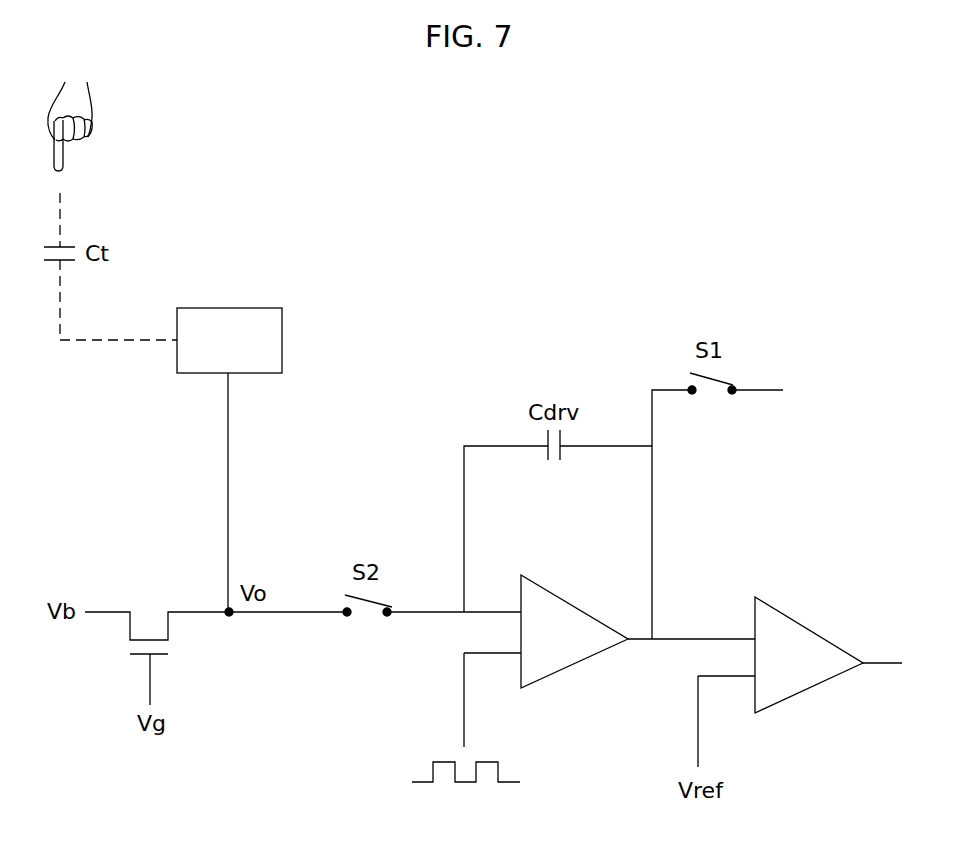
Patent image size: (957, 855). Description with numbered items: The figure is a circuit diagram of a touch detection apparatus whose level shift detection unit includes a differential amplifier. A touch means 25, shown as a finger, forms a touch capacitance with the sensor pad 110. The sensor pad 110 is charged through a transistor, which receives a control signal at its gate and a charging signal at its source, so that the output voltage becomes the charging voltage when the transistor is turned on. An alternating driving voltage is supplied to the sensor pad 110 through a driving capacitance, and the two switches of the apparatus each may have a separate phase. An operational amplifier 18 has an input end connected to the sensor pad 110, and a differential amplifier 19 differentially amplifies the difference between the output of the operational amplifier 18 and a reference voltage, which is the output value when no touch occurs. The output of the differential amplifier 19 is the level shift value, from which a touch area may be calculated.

The finger 25 is at (59, 160).
The sensor pad 110 is at (255, 308).
The operational amplifier 18 is at (553, 592).
The differential amplifier 19 is at (787, 613).